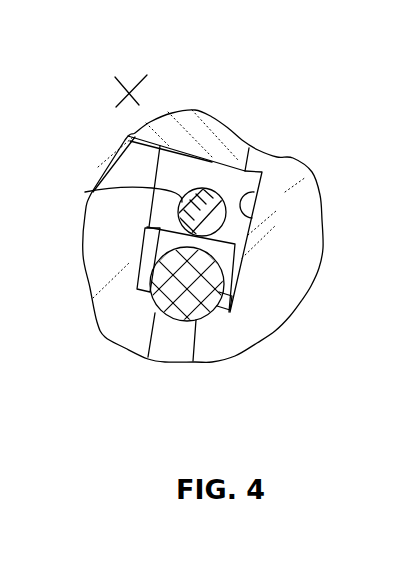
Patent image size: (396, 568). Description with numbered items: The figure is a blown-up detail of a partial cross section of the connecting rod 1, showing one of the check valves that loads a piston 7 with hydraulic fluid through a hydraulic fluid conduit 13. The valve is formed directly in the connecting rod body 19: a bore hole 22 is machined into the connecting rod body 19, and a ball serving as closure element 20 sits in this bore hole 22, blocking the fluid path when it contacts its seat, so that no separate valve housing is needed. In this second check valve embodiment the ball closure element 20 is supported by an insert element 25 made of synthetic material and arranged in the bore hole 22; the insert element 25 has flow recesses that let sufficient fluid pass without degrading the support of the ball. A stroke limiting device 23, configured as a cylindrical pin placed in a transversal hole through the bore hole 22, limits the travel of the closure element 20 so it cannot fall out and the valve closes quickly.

The connecting rod 1 is at (330, 55).
The piston 7 is at (205, 138).
The hydraulic fluid conduit 13 is at (178, 344).
The connecting rod body 19 is at (117, 238).
The closure element 20 is at (162, 301).
The bore hole 22 is at (252, 218).
The stroke limiting device 23 is at (130, 191).
The insert element 25 is at (240, 272).